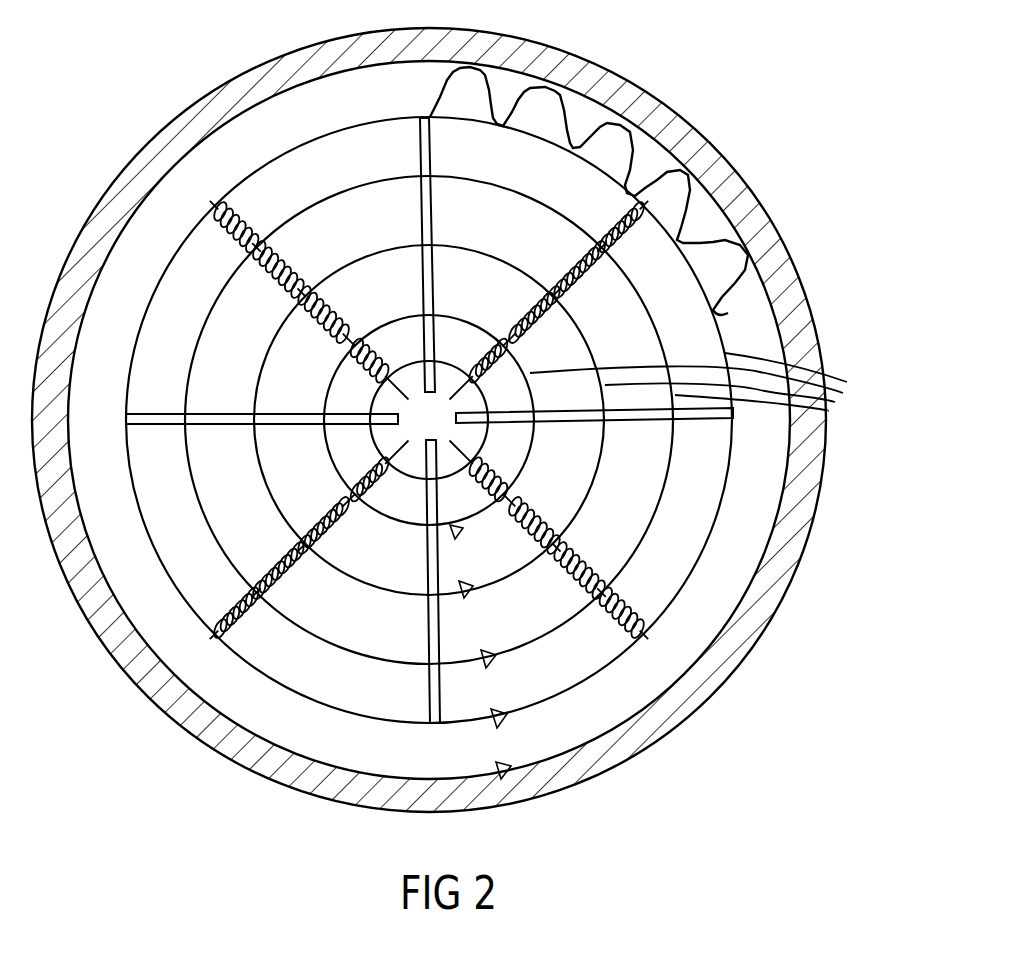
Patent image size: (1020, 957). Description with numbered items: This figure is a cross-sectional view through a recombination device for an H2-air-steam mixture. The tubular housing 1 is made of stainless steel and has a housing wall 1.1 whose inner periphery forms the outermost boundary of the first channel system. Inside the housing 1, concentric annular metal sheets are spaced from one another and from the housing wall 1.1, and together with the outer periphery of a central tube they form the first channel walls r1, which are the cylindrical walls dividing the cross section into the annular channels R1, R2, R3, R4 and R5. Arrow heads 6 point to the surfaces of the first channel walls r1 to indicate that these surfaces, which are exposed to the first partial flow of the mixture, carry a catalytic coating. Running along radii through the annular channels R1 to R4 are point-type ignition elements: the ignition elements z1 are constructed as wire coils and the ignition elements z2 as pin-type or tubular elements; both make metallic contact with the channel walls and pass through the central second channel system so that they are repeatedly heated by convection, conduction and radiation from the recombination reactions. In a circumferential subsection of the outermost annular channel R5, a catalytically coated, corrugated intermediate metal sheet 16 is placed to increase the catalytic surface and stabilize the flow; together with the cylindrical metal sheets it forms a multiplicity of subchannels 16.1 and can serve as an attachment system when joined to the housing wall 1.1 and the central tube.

The tubular housing 1 is at (754, 672).
The housing wall 1.1 is at (797, 553).
The corrugated intermediate metal sheet 16 is at (733, 183).
The subchannels 16.1 is at (643, 170).
The annular channel R1 is at (429, 403).
The annular channel R2 is at (429, 404).
The annular channel R3 is at (429, 414).
The annular channel R4 is at (429, 420).
The annular channel R5 is at (429, 420).
The ignition elements z1 is at (551, 503).
The ignition elements z2 is at (436, 228).
The arrow heads 6 is at (462, 533).
The first channel walls r1 is at (697, 394).